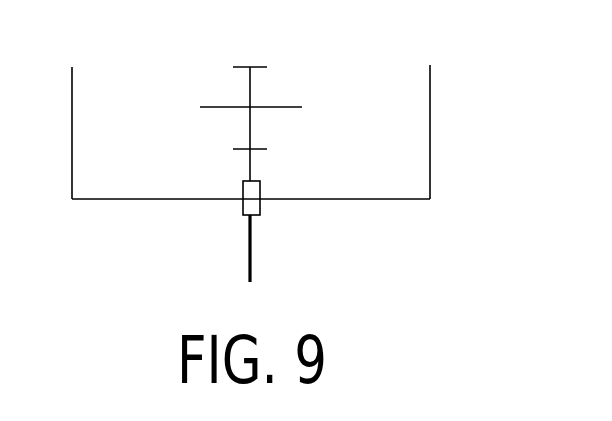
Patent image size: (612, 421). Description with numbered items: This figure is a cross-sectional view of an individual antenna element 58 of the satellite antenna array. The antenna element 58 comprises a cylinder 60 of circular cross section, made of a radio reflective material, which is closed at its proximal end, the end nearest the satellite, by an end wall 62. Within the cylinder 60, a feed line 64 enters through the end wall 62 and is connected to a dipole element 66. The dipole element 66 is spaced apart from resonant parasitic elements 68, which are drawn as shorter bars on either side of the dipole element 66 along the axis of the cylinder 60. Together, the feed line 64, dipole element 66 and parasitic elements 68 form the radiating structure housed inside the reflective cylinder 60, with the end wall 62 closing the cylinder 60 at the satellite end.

The antenna element 58 is at (497, 252).
The cylinder 60 is at (430, 110).
The end wall 62 is at (108, 202).
The feed line 64 is at (249, 257).
The dipole element 66 is at (212, 108).
The resonant parasitic elements 68 is at (262, 65).